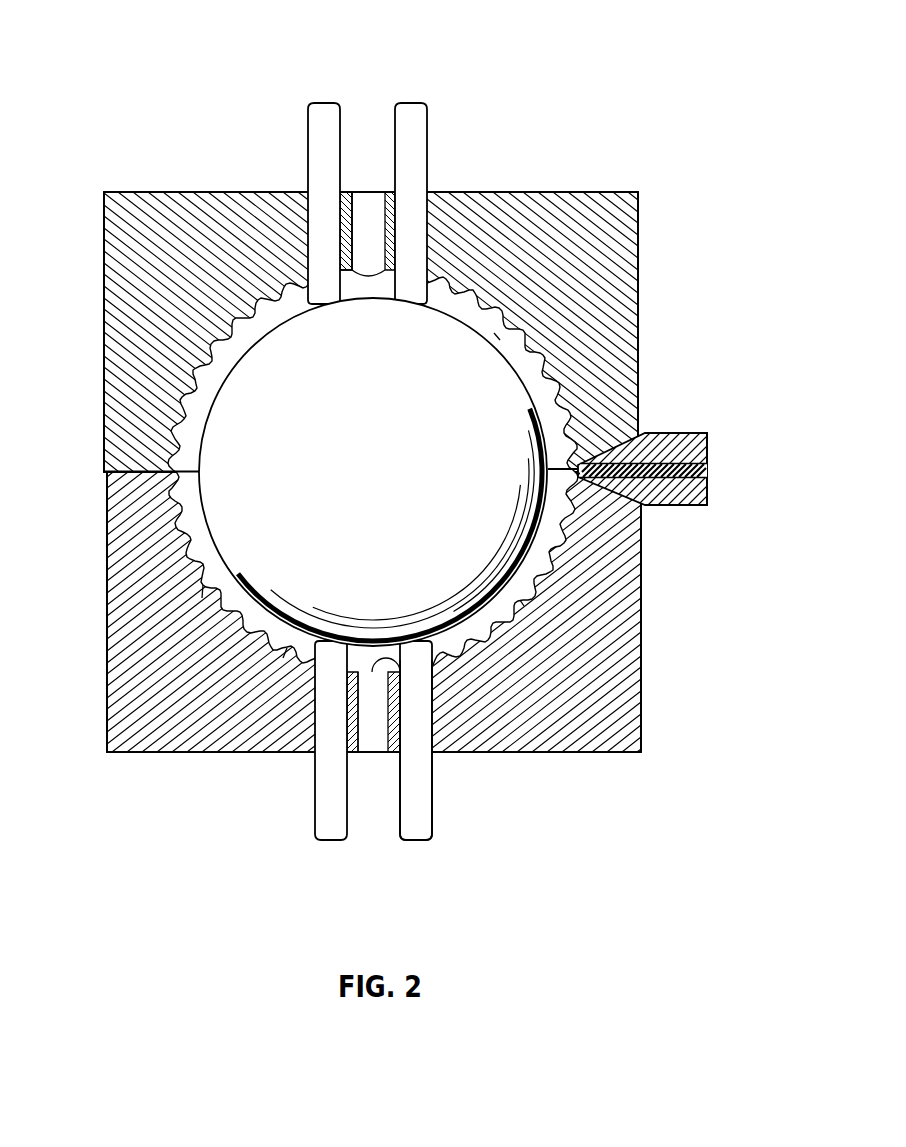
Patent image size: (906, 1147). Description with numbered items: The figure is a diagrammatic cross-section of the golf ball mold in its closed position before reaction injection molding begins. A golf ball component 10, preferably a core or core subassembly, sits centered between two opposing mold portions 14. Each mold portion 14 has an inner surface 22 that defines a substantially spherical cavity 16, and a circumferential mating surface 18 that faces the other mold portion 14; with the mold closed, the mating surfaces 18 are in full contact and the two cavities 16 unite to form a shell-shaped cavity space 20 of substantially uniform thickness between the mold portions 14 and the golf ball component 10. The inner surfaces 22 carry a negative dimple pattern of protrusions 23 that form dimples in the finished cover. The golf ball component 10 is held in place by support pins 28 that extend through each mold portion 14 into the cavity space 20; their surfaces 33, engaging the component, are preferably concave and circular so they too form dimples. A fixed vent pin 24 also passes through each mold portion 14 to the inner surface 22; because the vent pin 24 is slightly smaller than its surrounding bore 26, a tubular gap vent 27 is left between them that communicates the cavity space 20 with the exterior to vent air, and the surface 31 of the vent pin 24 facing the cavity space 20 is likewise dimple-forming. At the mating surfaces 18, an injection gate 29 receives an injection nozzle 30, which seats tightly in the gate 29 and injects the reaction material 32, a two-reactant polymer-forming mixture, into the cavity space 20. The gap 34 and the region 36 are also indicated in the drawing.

The golf ball component 10 is at (500, 409).
The mold portion 14 is at (140, 237).
The cavity 16 is at (272, 311).
The mating surface 18 is at (113, 398).
The cavity space 20 is at (247, 614).
The inner surface 22 is at (107, 566).
The protrusion 23 is at (202, 598).
The vent pin 24 is at (368, 216).
The bore 26 is at (339, 233).
The tubular gap vent 27 is at (351, 189).
The support pin 28 is at (418, 134).
The injection gate 29 is at (706, 436).
The injection nozzle 30 is at (686, 498).
The surface of vent pin 31 is at (397, 770).
The reaction material 32 is at (712, 469).
The surface of support pin 33 is at (283, 658).
The parting gap 34 is at (193, 532).
The cavity space 36 is at (494, 333).